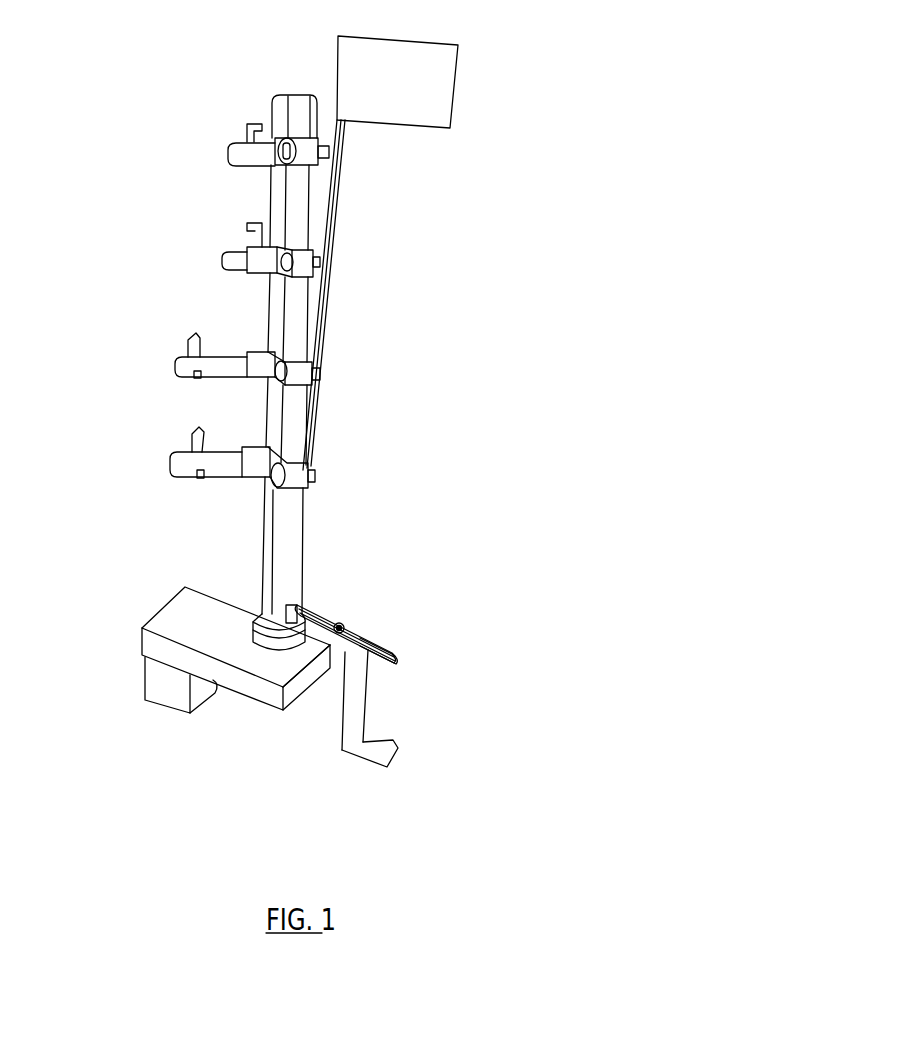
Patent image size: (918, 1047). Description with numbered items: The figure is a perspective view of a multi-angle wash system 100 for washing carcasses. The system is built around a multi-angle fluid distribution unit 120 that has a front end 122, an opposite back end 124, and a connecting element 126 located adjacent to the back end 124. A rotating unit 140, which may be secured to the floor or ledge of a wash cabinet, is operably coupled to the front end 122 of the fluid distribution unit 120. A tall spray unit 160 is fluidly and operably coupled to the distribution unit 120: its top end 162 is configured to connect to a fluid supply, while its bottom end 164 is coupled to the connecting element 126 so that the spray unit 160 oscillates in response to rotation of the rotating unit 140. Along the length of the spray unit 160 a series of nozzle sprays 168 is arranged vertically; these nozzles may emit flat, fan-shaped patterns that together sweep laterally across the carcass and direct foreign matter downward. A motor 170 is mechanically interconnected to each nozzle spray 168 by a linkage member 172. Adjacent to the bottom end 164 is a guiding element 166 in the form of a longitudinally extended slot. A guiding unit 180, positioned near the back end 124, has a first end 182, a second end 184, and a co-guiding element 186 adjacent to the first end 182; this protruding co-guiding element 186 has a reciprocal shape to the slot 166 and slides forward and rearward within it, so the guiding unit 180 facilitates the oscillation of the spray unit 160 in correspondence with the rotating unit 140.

The multi-angle wash system 100 is at (511, 72).
The multi-angle fluid distribution unit 120 is at (211, 686).
The front end 122 is at (173, 603).
The back end 124 is at (297, 690).
The connecting element 126 is at (255, 642).
The rotating unit 140 is at (160, 678).
The spray unit 160 is at (281, 345).
The top end 162 is at (293, 82).
The bottom end 164 is at (256, 617).
The guiding element 166 is at (382, 652).
The nozzle sprays 168 is at (183, 443).
The motor 170 is at (375, 97).
The linkage member 172 is at (333, 293).
The guiding unit 180 is at (401, 710).
The first end 182 is at (376, 616).
The second end 184 is at (401, 753).
The co-guiding element 186 is at (338, 624).